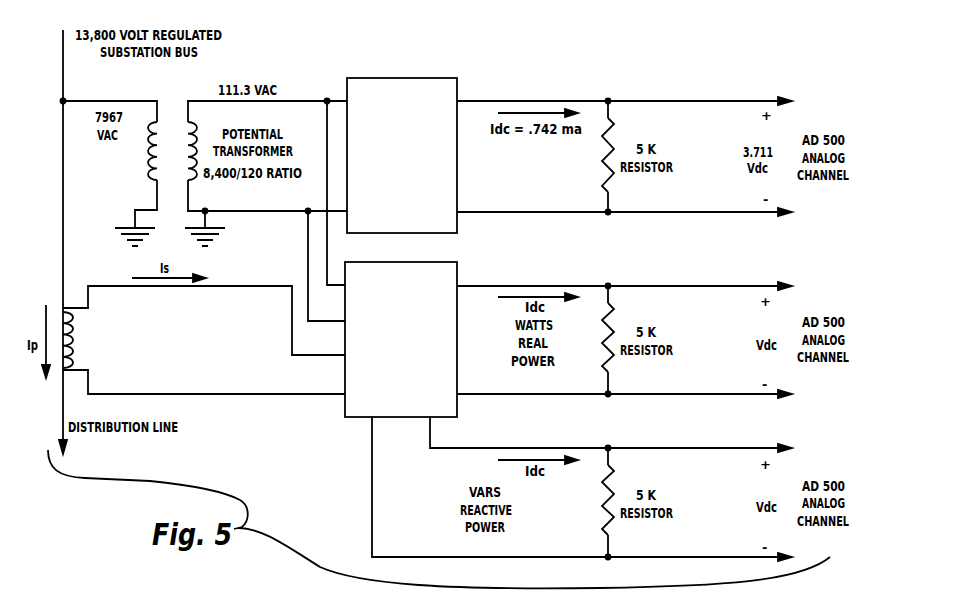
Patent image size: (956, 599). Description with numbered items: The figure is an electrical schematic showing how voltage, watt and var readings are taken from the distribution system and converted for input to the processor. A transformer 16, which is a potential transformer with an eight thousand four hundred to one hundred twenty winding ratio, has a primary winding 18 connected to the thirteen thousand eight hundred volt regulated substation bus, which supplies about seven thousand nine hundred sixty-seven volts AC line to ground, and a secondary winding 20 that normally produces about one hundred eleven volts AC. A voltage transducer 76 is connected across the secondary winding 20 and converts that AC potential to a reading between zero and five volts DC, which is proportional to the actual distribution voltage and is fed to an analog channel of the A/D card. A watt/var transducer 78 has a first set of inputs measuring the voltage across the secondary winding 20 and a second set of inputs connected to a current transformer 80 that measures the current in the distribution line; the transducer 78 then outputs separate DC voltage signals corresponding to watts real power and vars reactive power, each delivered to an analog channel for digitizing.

The transformer 16 is at (150, 128).
The primary winding 18 is at (153, 161).
The secondary winding 20 is at (192, 170).
The voltage transducer 76 is at (415, 78).
The watt/var transducer 78 is at (420, 262).
The current transformer 80 is at (86, 325).